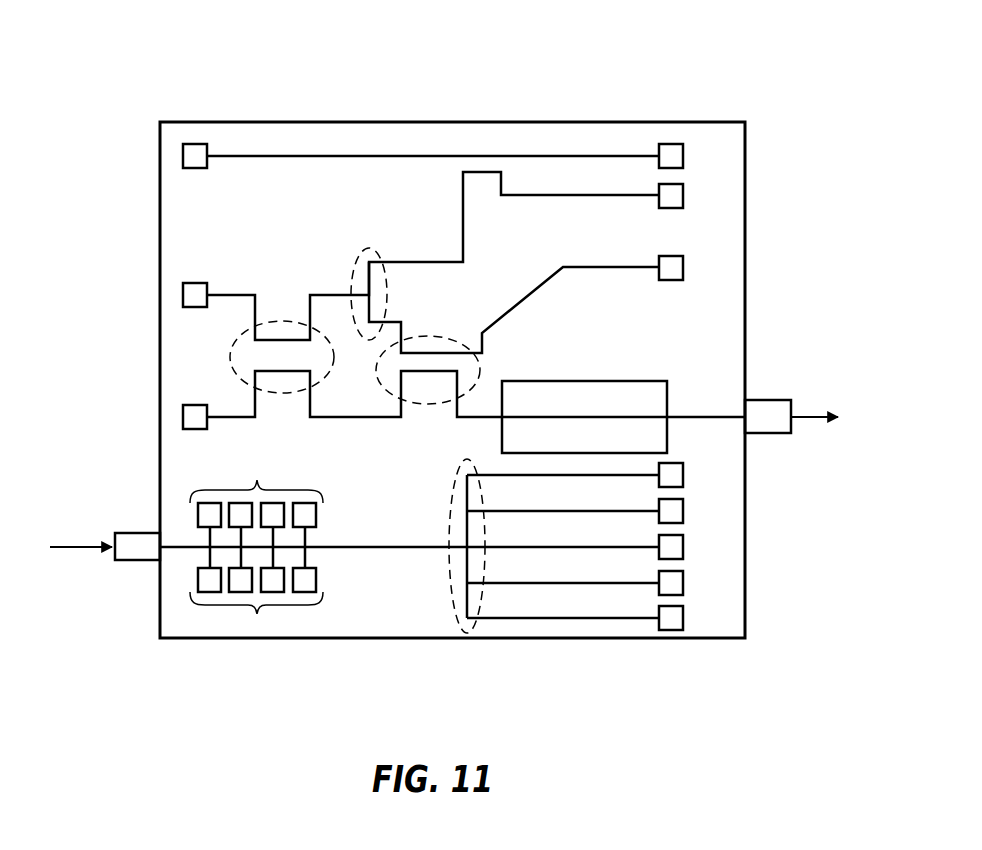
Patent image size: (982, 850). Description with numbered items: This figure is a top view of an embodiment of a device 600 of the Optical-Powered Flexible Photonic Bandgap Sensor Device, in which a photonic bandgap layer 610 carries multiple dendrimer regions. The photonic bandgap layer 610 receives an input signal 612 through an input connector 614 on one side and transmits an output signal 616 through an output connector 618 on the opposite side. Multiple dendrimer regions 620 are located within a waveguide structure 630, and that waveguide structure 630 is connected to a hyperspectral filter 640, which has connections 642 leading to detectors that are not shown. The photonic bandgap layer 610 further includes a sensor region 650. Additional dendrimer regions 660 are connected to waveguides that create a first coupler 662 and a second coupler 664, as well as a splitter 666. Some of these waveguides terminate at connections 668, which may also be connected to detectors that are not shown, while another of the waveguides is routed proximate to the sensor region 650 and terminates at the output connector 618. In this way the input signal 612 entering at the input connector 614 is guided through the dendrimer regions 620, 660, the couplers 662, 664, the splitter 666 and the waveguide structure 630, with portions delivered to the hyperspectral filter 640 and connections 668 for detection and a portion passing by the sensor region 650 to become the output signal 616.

The device 600 is at (500, 328).
The photonic bandgap layer 610 is at (745, 150).
The input signal 612 is at (73, 550).
The input connector 614 is at (136, 553).
The output signal 616 is at (815, 413).
The output connector 618 is at (767, 408).
The dendrimer regions 620 is at (260, 683).
The waveguide structure 630 is at (383, 547).
The hyperspectral filter 640 is at (452, 500).
The connections 642 is at (683, 583).
The sensor region 650 is at (622, 381).
The additional dendrimer regions 660 is at (196, 168).
The coupler 662 is at (232, 355).
The coupler 664 is at (481, 368).
The splitter 666 is at (368, 248).
The connections 668 is at (670, 197).